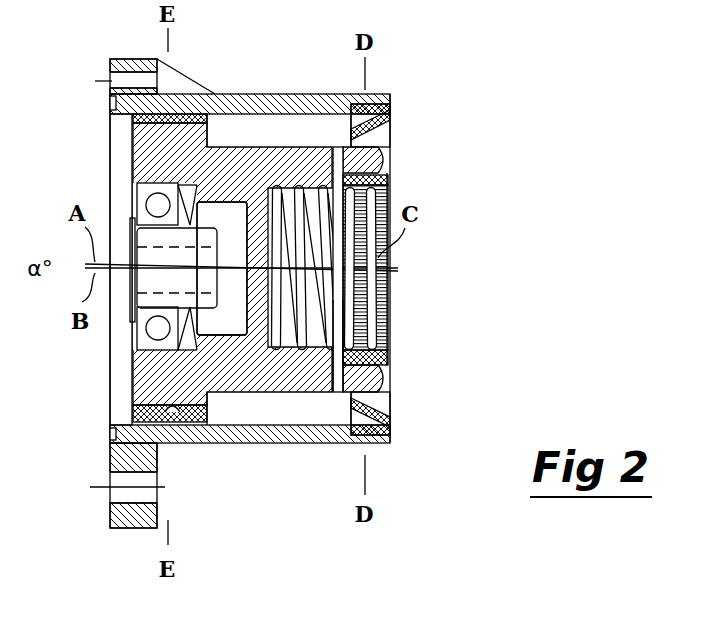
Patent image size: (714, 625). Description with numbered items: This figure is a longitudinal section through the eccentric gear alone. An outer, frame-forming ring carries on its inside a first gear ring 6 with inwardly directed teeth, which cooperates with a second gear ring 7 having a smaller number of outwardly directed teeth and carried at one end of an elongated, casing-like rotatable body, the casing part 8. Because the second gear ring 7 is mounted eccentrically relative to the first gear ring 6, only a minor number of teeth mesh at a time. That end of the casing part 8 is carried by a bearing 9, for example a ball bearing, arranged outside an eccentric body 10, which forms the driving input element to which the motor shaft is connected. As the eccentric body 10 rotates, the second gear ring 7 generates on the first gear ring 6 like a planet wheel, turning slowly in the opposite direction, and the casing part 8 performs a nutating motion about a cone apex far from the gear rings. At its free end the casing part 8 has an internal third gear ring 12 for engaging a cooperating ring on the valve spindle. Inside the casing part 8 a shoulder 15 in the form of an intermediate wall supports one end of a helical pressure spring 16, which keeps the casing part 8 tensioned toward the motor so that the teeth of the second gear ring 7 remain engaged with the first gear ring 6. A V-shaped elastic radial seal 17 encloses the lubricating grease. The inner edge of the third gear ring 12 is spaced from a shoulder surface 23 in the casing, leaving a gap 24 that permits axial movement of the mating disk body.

The first gear ring 6 is at (172, 408).
The second gear ring 7 is at (178, 120).
The casing part 8 is at (262, 158).
The bearing 9 is at (138, 197).
The eccentric body 10 is at (150, 284).
The third gear ring 12 is at (372, 351).
The shoulder 15 is at (250, 233).
The pressure spring 16 is at (372, 302).
The radial seal 17 is at (385, 425).
The shoulder surface 23 is at (335, 358).
The gap 24 is at (332, 185).